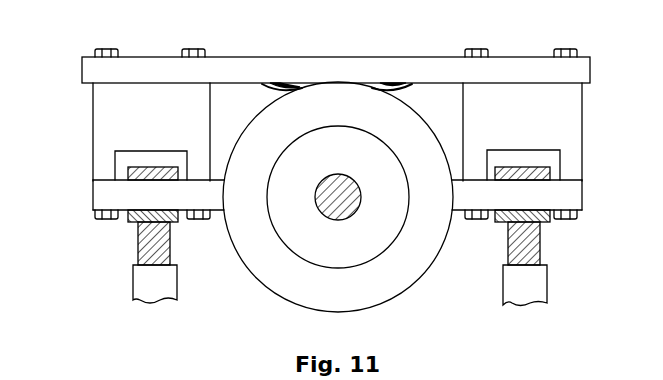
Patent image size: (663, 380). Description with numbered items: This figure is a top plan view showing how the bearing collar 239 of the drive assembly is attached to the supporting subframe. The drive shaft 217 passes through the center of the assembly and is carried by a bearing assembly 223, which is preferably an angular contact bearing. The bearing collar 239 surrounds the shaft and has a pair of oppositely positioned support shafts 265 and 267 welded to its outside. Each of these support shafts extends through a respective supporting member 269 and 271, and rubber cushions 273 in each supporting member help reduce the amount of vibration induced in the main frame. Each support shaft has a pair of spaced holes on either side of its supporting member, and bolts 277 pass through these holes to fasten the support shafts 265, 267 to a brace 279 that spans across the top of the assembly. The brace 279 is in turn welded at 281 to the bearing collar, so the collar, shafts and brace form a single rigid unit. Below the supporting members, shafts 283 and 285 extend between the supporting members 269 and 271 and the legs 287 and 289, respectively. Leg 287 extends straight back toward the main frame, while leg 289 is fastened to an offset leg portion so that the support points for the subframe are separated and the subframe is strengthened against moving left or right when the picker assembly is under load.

The drive shaft 217 is at (355, 206).
The bearing assembly 223 is at (312, 221).
The bearing collar 239 is at (268, 272).
The support shaft 265 is at (100, 193).
The support shaft 267 is at (575, 198).
The supporting member 269 is at (135, 220).
The supporting member 271 is at (540, 228).
The rubber cushion 273 is at (135, 168).
The bolt 277 is at (188, 50).
The brace 279 is at (366, 58).
The weld 281 is at (392, 89).
The shaft 283 is at (131, 268).
The shaft 285 is at (540, 262).
The leg 287 is at (140, 297).
The leg 289 is at (535, 291).